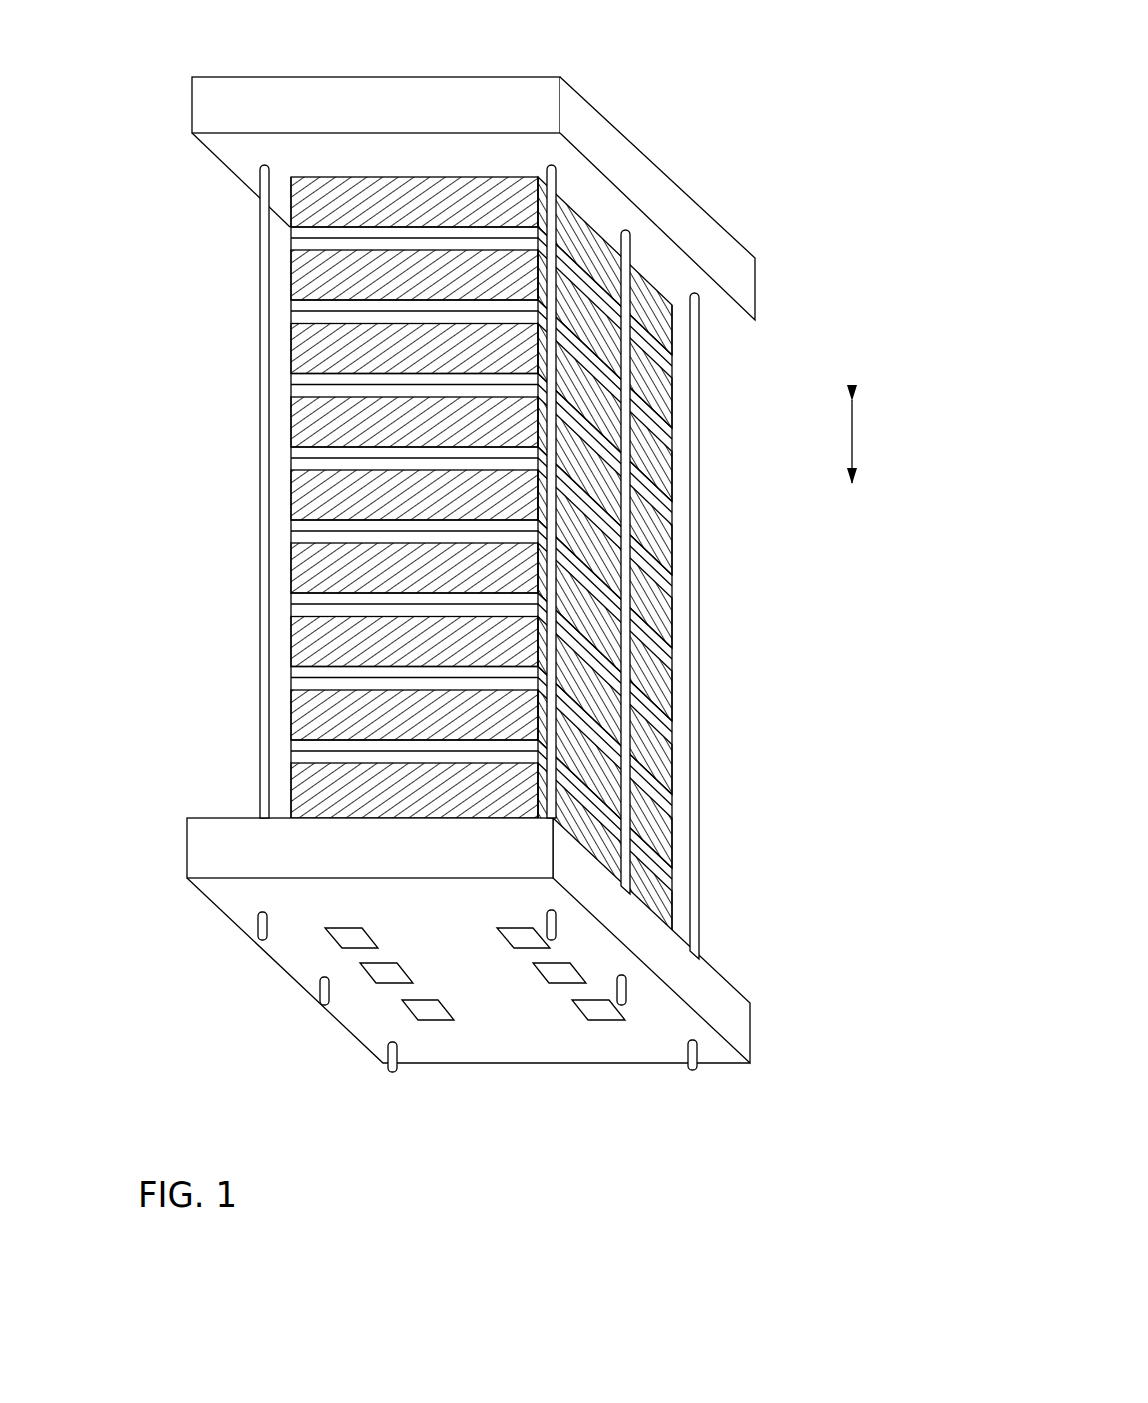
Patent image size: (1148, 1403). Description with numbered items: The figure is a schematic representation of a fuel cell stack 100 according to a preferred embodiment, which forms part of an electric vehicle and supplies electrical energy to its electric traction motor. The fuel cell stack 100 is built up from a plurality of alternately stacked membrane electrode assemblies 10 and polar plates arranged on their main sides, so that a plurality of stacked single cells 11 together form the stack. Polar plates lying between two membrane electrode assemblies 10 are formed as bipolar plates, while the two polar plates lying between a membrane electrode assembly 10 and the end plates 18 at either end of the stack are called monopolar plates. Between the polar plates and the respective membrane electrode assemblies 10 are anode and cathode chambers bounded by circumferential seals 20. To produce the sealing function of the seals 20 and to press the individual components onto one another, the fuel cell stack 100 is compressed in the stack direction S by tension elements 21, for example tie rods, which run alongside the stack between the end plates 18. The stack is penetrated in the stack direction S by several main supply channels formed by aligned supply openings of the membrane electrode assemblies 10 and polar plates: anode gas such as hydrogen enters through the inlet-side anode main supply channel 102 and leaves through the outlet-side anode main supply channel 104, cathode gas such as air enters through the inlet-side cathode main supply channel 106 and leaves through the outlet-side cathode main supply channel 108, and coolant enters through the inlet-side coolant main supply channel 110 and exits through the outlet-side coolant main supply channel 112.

The fuel cell stack 100 is at (519, 591).
The end plate 18 is at (680, 212).
The seal 20 is at (660, 568).
The membrane electrode assembly 10 is at (665, 578).
The single cell 11 is at (283, 458).
The tension element 21 is at (695, 727).
The stack direction S is at (849, 440).
The inlet-side anode main supply channel 102 is at (411, 1015).
The outlet-side anode main supply channel 104 is at (520, 941).
The inlet-side cathode main supply channel 106 is at (338, 940).
The outlet-side cathode main supply channel 108 is at (595, 1013).
The inlet-side coolant main supply channel 110 is at (374, 975).
The outlet-side coolant main supply channel 112 is at (555, 976).